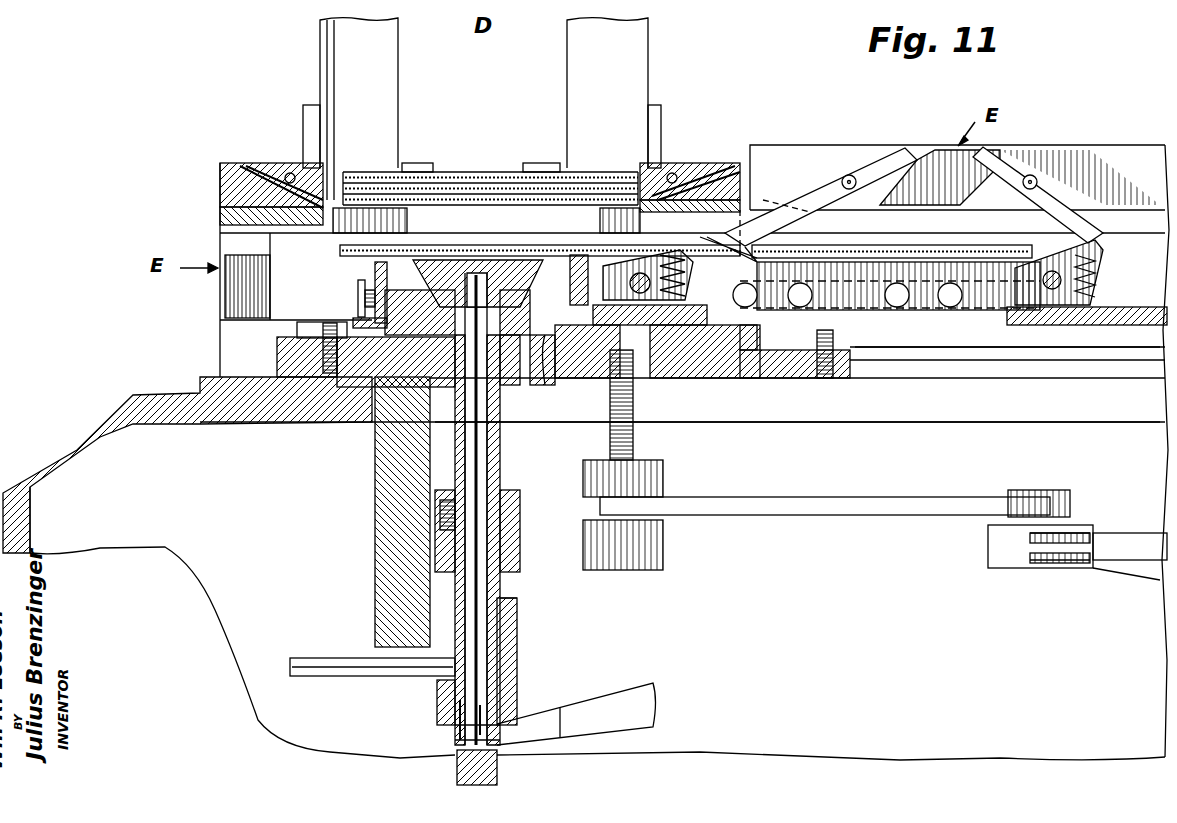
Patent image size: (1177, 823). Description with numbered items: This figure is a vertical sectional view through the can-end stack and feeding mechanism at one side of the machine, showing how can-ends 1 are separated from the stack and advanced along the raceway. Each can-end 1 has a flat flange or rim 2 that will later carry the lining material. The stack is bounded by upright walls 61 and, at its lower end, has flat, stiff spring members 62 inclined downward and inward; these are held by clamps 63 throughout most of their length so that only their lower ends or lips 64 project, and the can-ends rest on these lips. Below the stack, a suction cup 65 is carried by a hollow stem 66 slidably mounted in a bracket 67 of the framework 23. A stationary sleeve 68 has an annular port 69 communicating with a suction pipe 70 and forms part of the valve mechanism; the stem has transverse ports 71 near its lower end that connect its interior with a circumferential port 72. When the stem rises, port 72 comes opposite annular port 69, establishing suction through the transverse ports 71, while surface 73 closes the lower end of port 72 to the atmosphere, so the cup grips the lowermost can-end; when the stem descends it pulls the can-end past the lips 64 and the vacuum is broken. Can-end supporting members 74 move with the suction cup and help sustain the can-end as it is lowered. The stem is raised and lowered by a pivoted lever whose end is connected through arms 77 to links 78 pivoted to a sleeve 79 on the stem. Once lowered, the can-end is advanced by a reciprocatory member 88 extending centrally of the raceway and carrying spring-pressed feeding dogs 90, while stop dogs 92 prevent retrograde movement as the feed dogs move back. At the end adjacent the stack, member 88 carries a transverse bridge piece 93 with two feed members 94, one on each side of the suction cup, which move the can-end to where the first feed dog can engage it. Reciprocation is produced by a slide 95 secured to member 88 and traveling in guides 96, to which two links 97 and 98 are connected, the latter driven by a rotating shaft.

The can-end 1 is at (470, 173).
The flat flange or rim 2 is at (668, 240).
The framework 23 is at (963, 412).
The upright walls 61 is at (378, 85).
The flat, stiff spring members 62 is at (222, 214).
The clamps 63 is at (290, 162).
The lower ends or lips 64 is at (417, 210).
The suction cup 65 is at (495, 262).
The hollow stem 66 is at (480, 446).
The bracket 67 is at (425, 355).
The stationary sleeve 68 is at (508, 614).
The annular port 69 is at (495, 668).
The suction pipe 70 is at (332, 677).
The transverse ports 71 is at (483, 705).
The circumferential port 72 is at (490, 710).
The surface 73 is at (498, 777).
The can-end supporting members 74 is at (375, 267).
The arms 77 is at (642, 688).
The links 78 is at (380, 587).
The sleeve 79 is at (512, 530).
The reciprocatory member 88 is at (958, 268).
The spring-pressed feeding dogs 90 is at (625, 330).
The stop dogs 92 is at (800, 185).
The transverse bridge piece 93 is at (552, 355).
The feed members 94 is at (240, 307).
The slide 95 is at (757, 368).
The guides 96 is at (918, 355).
The link 97 is at (762, 520).
The link 98 is at (1108, 565).